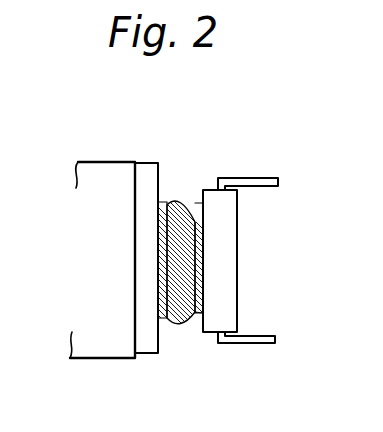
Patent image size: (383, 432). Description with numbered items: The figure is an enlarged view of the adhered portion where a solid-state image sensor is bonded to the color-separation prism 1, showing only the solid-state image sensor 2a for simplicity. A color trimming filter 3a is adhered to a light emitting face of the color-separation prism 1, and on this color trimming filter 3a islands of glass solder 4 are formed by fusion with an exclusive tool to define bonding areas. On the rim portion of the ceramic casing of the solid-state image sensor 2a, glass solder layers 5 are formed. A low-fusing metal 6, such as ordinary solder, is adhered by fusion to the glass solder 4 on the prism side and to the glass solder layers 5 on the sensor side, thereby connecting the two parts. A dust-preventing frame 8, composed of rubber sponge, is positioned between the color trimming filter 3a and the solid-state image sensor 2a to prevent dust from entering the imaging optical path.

The color-separation prism 1 is at (112, 178).
The glass solder 4 is at (158, 245).
The color trimming filter 3a is at (147, 333).
The low-fusing metal 6 is at (180, 200).
The glass solder layers 5 is at (203, 278).
The solid-state image sensor 2a is at (223, 243).
The dust-preventing frame 8 is at (198, 312).